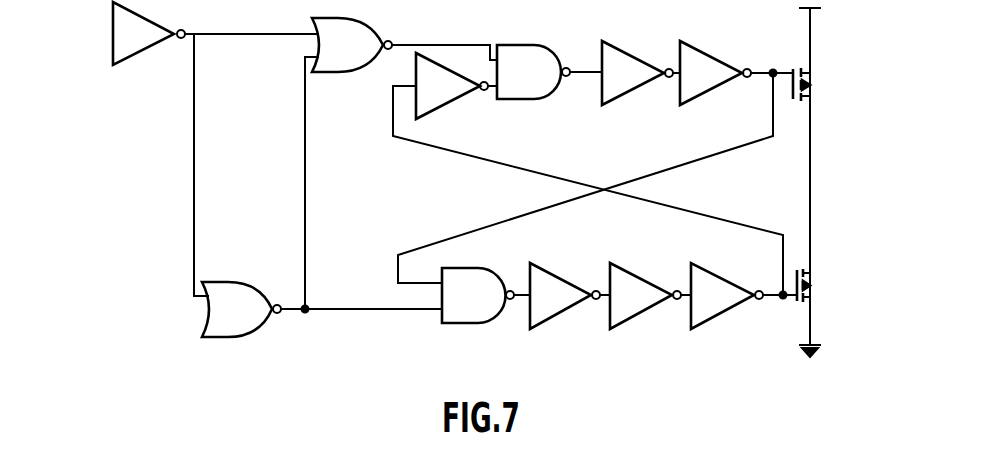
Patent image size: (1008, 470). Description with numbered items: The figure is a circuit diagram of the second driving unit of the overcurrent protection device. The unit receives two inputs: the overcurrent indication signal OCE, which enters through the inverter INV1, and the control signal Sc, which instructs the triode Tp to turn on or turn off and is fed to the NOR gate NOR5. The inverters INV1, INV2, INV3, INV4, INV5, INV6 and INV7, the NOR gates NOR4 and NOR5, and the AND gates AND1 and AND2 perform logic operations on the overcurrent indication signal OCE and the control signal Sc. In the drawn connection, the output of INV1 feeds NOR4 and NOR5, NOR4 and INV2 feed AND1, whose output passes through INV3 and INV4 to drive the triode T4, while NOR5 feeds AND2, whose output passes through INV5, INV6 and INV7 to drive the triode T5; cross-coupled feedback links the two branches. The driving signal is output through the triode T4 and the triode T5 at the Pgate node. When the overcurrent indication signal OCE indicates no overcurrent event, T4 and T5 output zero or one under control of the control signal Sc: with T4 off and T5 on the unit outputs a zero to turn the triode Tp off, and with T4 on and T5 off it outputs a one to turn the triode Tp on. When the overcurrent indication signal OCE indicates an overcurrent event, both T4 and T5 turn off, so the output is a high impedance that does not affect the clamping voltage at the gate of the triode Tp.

The overcurrent indication signal OCE is at (98, 34).
The control signal Sc is at (188, 320).
The Pgate output signal Pgate is at (810, 187).
The inverter INV1 is at (149, 33).
The inverter INV2 is at (452, 86).
The inverter INV3 is at (637, 73).
The inverter INV4 is at (715, 73).
The inverter INV5 is at (565, 296).
The inverter INV6 is at (645, 296).
The inverter INV7 is at (727, 296).
The NOR gate NOR4 is at (352, 45).
The NOR gate NOR5 is at (241, 309).
The AND gate AND1 is at (533, 72).
The AND gate AND2 is at (478, 295).
The triode T4 is at (818, 85).
The triode T5 is at (820, 288).